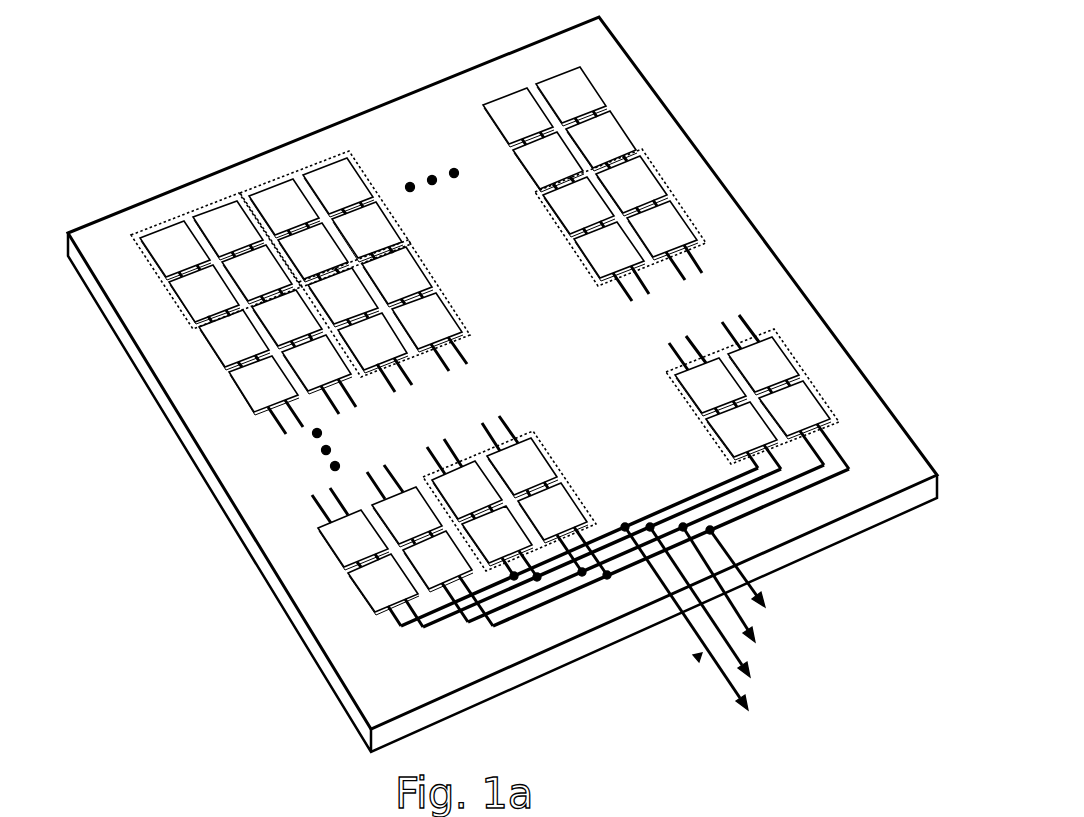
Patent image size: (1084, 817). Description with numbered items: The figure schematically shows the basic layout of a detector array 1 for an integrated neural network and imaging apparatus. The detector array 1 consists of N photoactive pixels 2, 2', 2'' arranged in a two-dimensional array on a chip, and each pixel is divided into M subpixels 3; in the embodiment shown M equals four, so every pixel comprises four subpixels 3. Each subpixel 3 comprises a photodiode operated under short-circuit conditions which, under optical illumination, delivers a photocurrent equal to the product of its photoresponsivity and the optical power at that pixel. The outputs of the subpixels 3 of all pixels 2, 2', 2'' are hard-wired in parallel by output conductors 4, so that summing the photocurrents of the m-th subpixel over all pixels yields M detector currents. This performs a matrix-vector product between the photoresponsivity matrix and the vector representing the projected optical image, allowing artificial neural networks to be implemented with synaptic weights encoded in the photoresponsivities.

The detector array 1 is at (382, 105).
The photoactive pixel 2 is at (200, 194).
The photoactive pixel 2' is at (311, 148).
The photoactive pixel 2'' is at (384, 210).
The subpixel 3 is at (172, 232).
The output conductor 4 is at (670, 717).